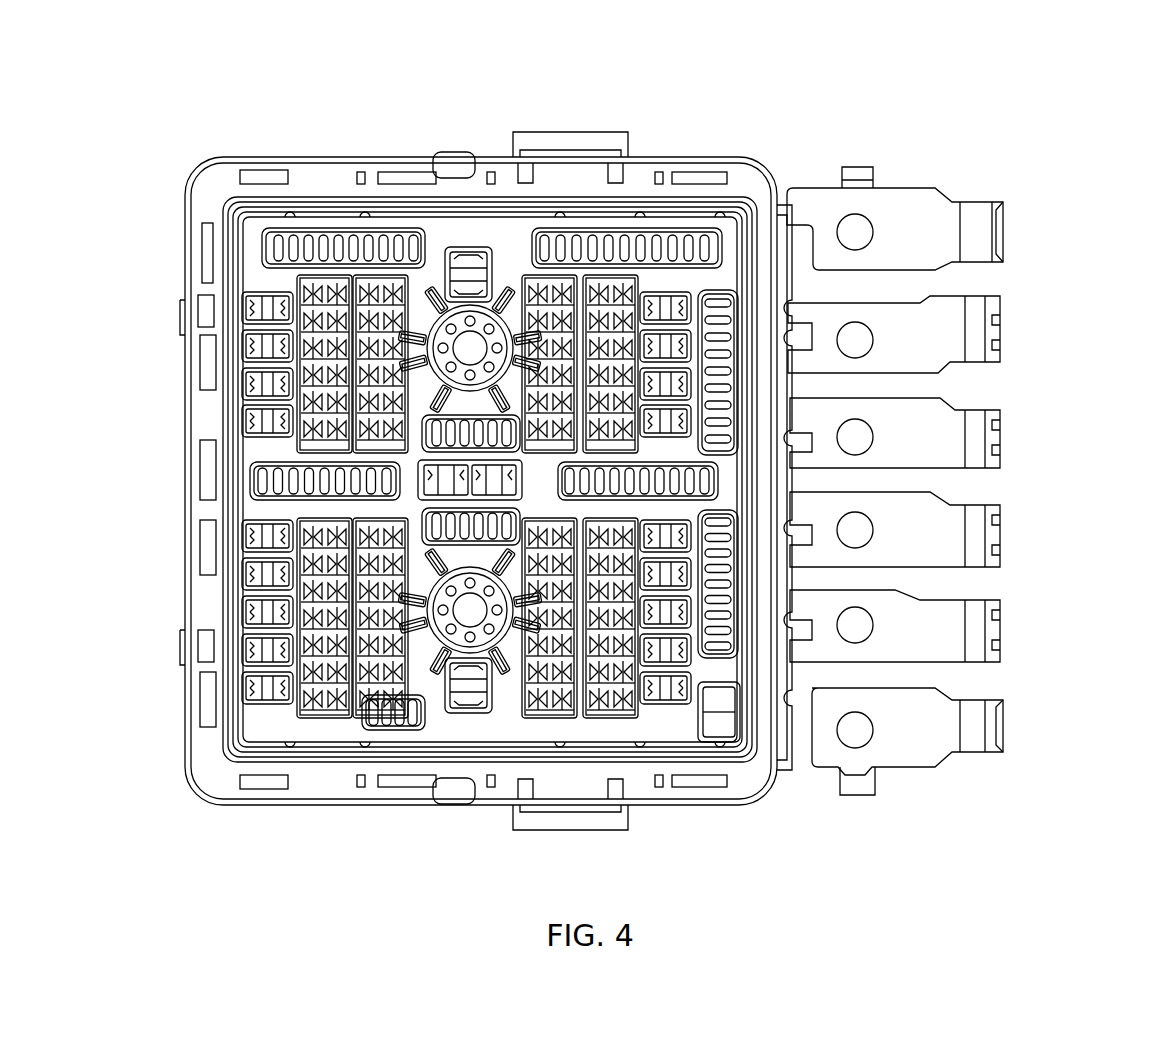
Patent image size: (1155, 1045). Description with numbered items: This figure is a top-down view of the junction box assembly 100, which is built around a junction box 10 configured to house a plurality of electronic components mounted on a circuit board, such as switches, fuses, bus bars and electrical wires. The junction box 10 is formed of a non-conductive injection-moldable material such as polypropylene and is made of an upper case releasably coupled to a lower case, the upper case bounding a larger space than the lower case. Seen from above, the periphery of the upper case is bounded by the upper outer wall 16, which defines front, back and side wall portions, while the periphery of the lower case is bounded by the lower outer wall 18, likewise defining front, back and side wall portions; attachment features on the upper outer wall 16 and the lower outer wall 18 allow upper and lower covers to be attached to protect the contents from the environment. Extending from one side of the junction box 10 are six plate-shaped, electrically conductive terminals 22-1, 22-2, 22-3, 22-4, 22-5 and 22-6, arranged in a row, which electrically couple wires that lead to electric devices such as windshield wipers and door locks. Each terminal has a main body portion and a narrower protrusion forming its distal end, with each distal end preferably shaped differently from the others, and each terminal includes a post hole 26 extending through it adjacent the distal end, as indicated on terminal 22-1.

The junction box assembly 100 is at (1037, 80).
The junction box 10 is at (170, 130).
The lower outer wall 18 is at (262, 806).
The upper outer wall 16 is at (347, 766).
The terminal 22-1 is at (907, 775).
The terminal 22-2 is at (895, 626).
The terminal 22-3 is at (895, 529).
The terminal 22-4 is at (895, 433).
The terminal 22-5 is at (894, 334).
The terminal 22-6 is at (895, 218).
The post hole 26 is at (856, 737).